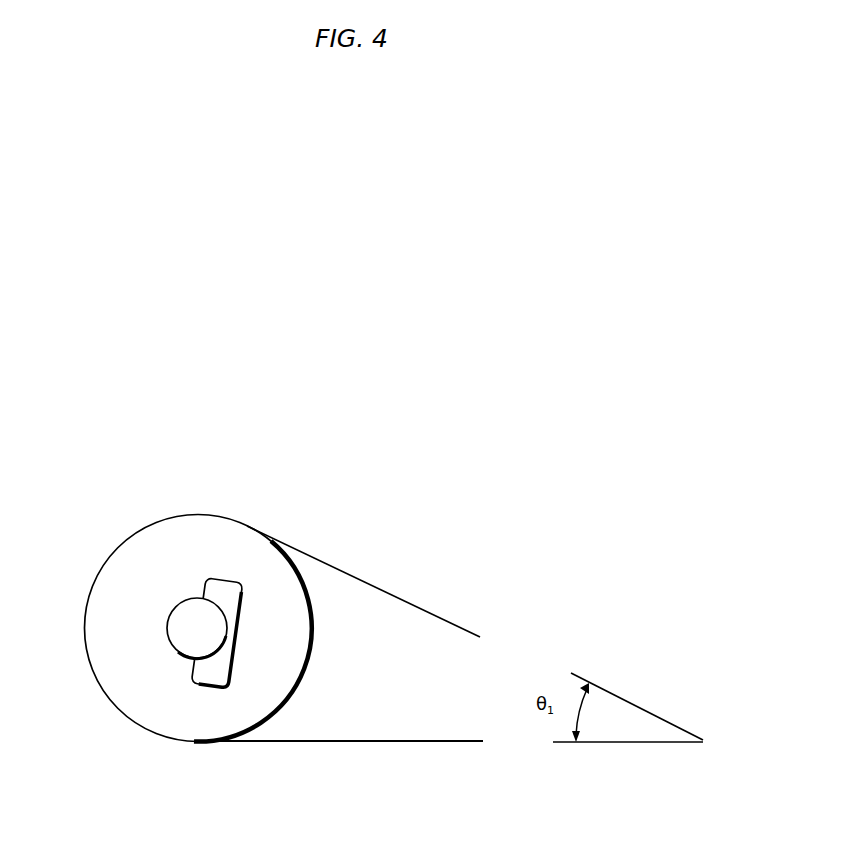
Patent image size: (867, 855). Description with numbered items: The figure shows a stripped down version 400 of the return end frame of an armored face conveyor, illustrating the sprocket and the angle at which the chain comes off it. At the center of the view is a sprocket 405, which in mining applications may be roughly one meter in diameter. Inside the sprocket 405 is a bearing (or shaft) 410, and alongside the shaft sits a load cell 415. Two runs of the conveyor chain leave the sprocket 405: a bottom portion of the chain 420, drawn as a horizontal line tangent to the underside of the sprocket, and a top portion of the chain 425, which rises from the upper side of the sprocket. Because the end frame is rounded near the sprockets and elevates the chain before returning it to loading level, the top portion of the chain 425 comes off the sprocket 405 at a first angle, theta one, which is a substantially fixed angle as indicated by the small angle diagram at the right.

The stripped down version of the return end frame 400 is at (461, 296).
The sprocket 405 is at (122, 540).
The bearing (or shaft) 410 is at (187, 600).
The load cell 415 is at (237, 633).
The bottom portion of the chain 420 is at (387, 741).
The top portion of the chain 425 is at (402, 597).